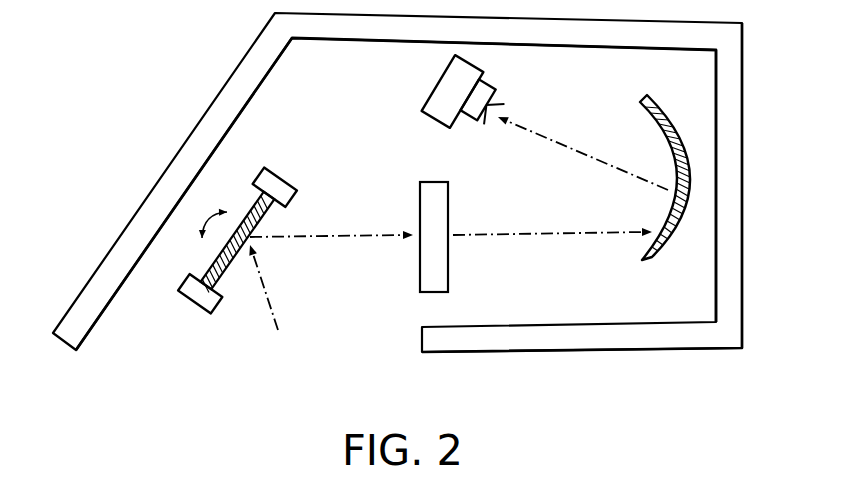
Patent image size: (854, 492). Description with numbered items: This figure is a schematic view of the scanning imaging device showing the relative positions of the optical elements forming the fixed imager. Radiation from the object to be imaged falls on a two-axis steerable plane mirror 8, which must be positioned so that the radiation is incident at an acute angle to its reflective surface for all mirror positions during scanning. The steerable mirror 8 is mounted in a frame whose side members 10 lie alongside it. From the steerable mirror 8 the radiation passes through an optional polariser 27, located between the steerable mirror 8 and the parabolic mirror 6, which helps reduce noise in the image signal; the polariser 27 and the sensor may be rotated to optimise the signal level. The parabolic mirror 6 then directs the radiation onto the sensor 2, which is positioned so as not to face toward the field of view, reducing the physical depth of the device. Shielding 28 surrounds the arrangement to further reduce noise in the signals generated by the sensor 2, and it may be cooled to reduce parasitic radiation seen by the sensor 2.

The sensor 2 is at (417, 90).
The parabolic mirror 6 is at (640, 100).
The two-axis steerable plane mirror 8 is at (220, 282).
The side member 10 is at (283, 173).
The polariser 27 is at (418, 182).
The shielding 28 is at (575, 352).